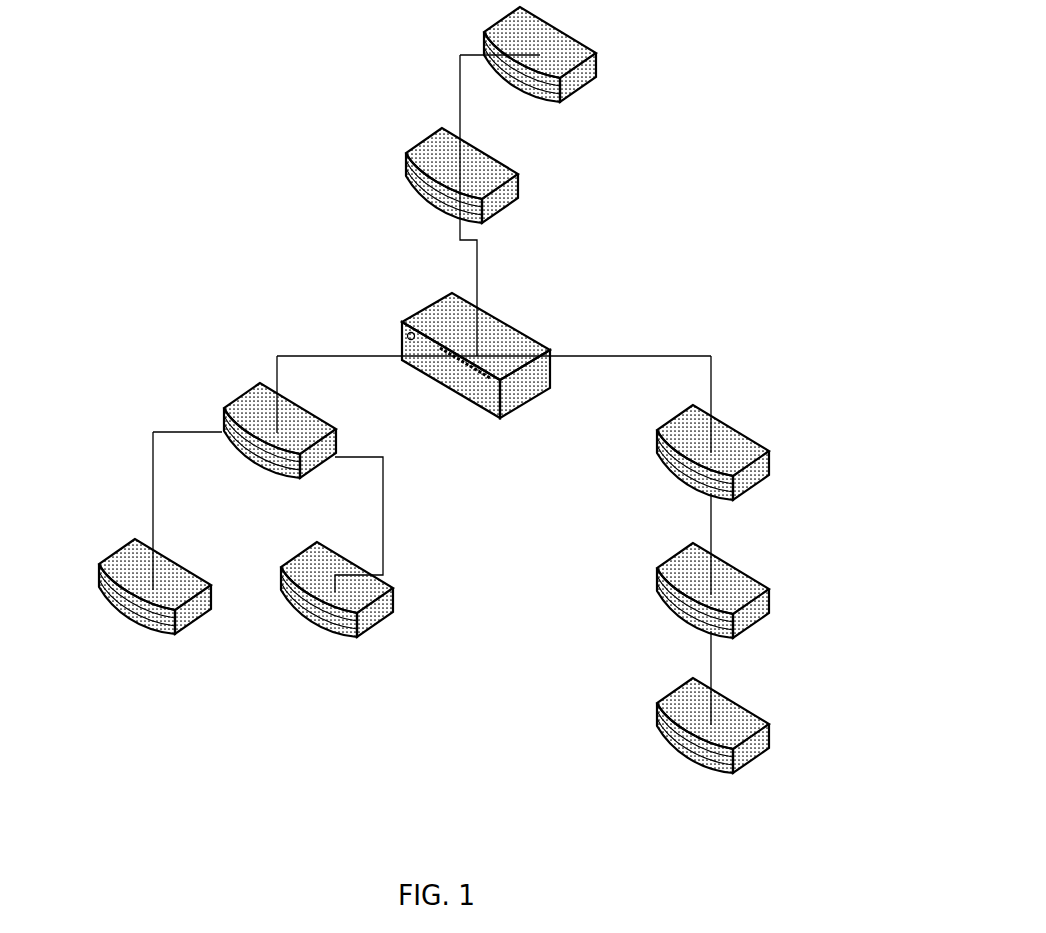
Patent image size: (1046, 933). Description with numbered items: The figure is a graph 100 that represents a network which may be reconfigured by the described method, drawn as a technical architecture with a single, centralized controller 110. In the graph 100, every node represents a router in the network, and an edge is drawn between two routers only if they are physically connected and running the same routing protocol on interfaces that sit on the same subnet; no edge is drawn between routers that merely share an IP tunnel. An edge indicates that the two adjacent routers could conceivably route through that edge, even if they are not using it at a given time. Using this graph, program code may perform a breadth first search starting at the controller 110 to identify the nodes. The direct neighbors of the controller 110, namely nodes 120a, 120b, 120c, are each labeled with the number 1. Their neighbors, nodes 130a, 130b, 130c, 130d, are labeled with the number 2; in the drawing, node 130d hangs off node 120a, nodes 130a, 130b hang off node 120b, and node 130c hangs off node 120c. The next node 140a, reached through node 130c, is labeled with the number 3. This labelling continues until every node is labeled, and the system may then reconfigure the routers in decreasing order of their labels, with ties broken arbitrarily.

The graph 100 is at (727, 30).
The controller 110 is at (476, 370).
The node 120a is at (462, 191).
The node 120b is at (280, 445).
The node 120c is at (713, 467).
The node 130a is at (155, 600).
The node 130b is at (337, 604).
The node 130c is at (713, 605).
The node 130d is at (540, 69).
The node 140a is at (713, 740).
The label 1 is at (494, 306).
The label 2 is at (393, 591).
The label 3 is at (802, 726).